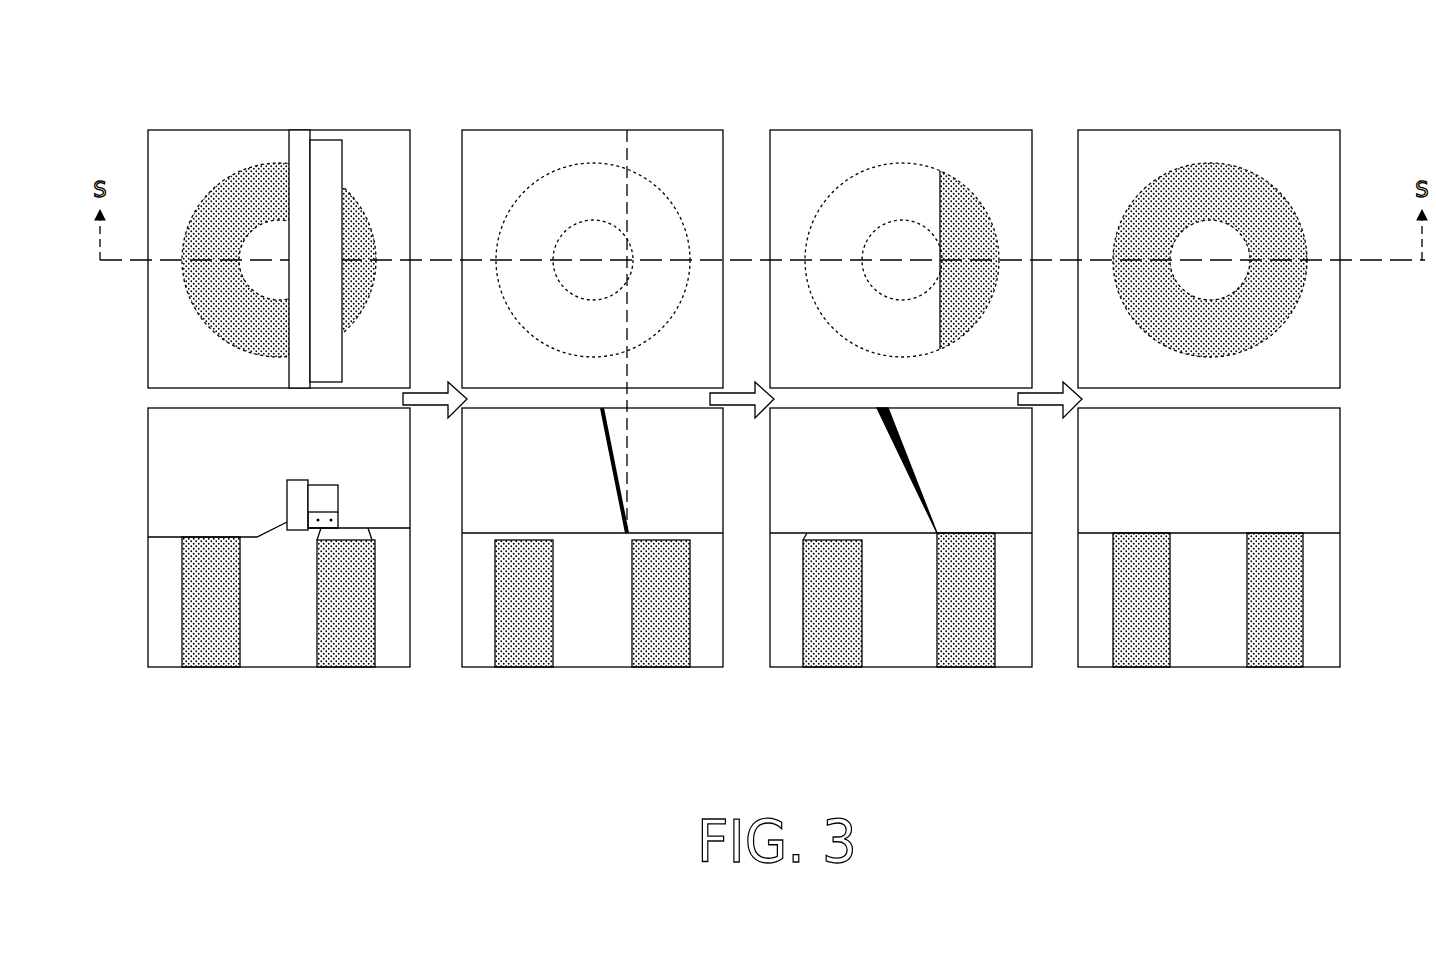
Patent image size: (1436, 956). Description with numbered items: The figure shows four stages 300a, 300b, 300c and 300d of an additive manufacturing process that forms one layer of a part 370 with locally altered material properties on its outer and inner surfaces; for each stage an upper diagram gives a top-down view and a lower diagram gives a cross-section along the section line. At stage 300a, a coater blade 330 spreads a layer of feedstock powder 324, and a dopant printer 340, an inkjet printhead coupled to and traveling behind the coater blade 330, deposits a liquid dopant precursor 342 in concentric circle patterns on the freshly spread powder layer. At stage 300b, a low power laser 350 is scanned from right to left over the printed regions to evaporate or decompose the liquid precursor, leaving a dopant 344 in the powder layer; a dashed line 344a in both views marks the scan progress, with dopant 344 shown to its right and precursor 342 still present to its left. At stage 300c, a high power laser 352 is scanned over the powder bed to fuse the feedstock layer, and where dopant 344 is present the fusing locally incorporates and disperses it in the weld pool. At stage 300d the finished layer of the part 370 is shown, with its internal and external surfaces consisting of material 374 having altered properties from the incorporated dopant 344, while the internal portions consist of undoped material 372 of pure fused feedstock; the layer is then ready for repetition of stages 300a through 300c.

The first stage 300a is at (222, 92).
The second stage 300b is at (557, 92).
The third stage 300c is at (885, 92).
The fourth stage 300d is at (1175, 92).
The feedstock powder 324 is at (158, 343).
The coater blade 330 is at (293, 130).
The dopant printer 340 is at (327, 138).
The liquid dopant precursor 342 is at (363, 207).
The dopant 344 is at (655, 185).
The dashed line 344a is at (627, 130).
The laser 350 is at (606, 445).
The laser 352 is at (905, 470).
The part 370 is at (233, 166).
The material 372 is at (1290, 203).
The material 374 is at (1292, 308).